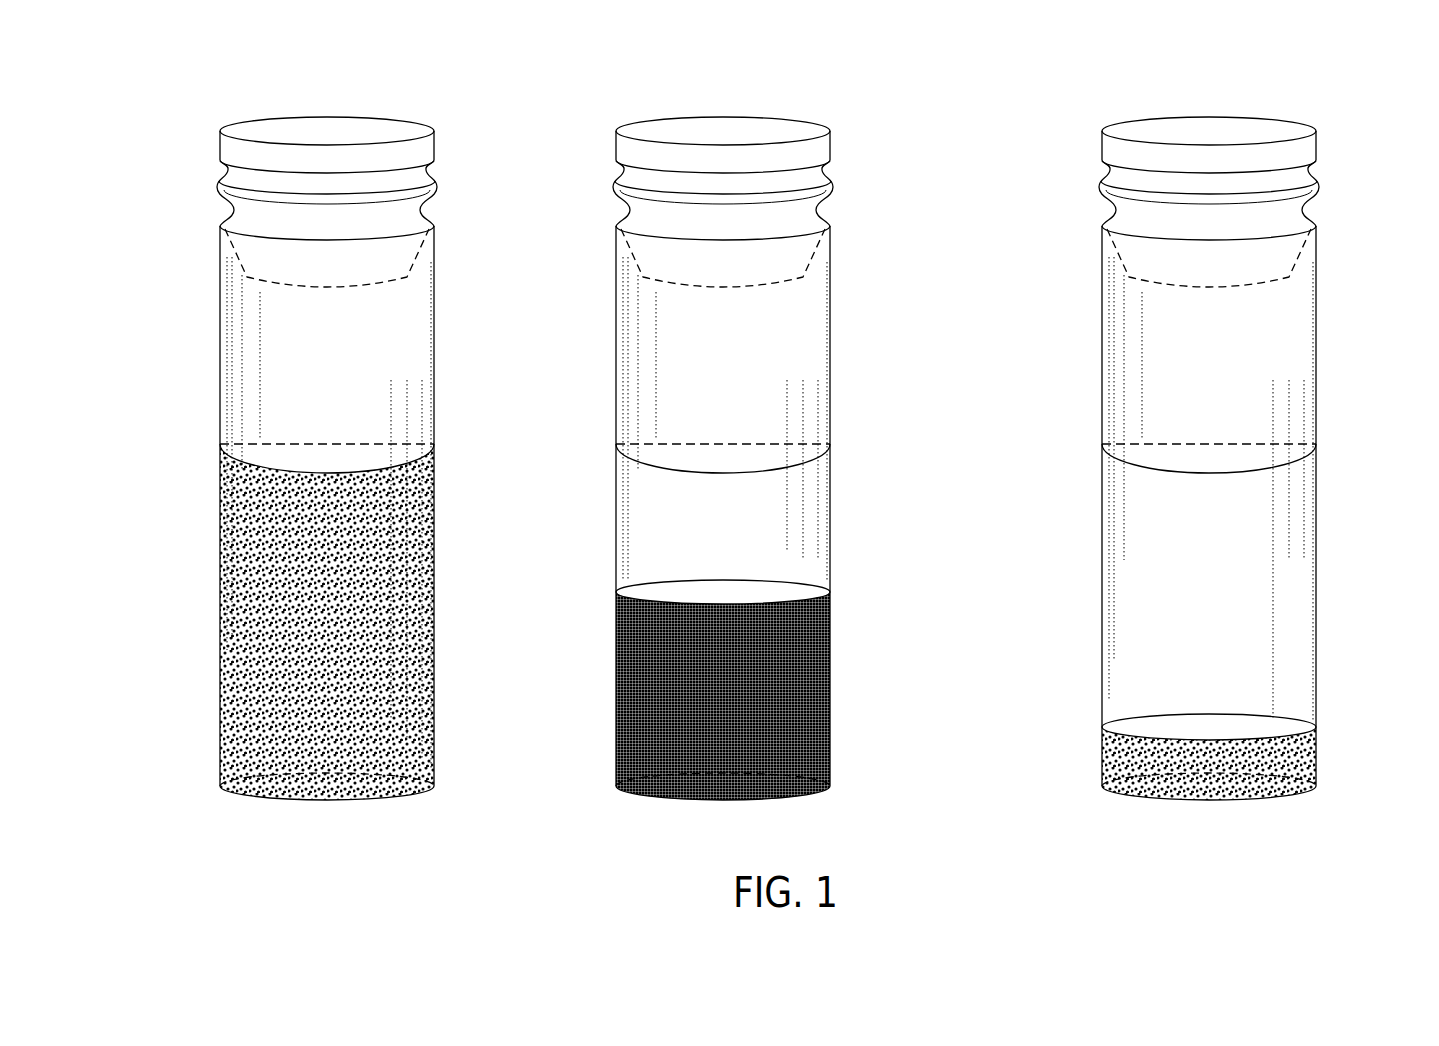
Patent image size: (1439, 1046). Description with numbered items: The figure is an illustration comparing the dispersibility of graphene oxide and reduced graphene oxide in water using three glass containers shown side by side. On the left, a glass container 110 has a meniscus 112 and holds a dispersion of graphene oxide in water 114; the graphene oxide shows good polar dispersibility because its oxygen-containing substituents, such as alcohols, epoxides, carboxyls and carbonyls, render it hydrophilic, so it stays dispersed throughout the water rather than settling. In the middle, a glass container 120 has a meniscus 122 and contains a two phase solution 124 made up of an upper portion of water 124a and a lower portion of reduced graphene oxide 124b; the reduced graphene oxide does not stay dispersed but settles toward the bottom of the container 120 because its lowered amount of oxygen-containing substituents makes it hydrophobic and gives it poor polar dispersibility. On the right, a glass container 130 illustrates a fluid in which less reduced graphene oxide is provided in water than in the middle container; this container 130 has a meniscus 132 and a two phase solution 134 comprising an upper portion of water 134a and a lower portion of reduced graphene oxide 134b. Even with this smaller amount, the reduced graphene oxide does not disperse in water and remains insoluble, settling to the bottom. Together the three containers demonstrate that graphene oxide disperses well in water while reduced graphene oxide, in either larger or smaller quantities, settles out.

The glass container 110 is at (278, 435).
The meniscus 112 is at (276, 438).
The dispersion of graphene oxide in water 114 is at (287, 622).
The glass container 120 is at (738, 443).
The meniscus 122 is at (672, 438).
The two phase solution 124 is at (748, 629).
The upper portion of water 124a is at (783, 518).
The lower portion of reduced graphene oxide 124b is at (788, 697).
The glass container 130 is at (1220, 443).
The meniscus 132 is at (1158, 438).
The two phase solution 134 is at (1230, 629).
The upper portion of water 134a is at (1270, 585).
The lower portion of reduced graphene oxide 134b is at (1270, 764).